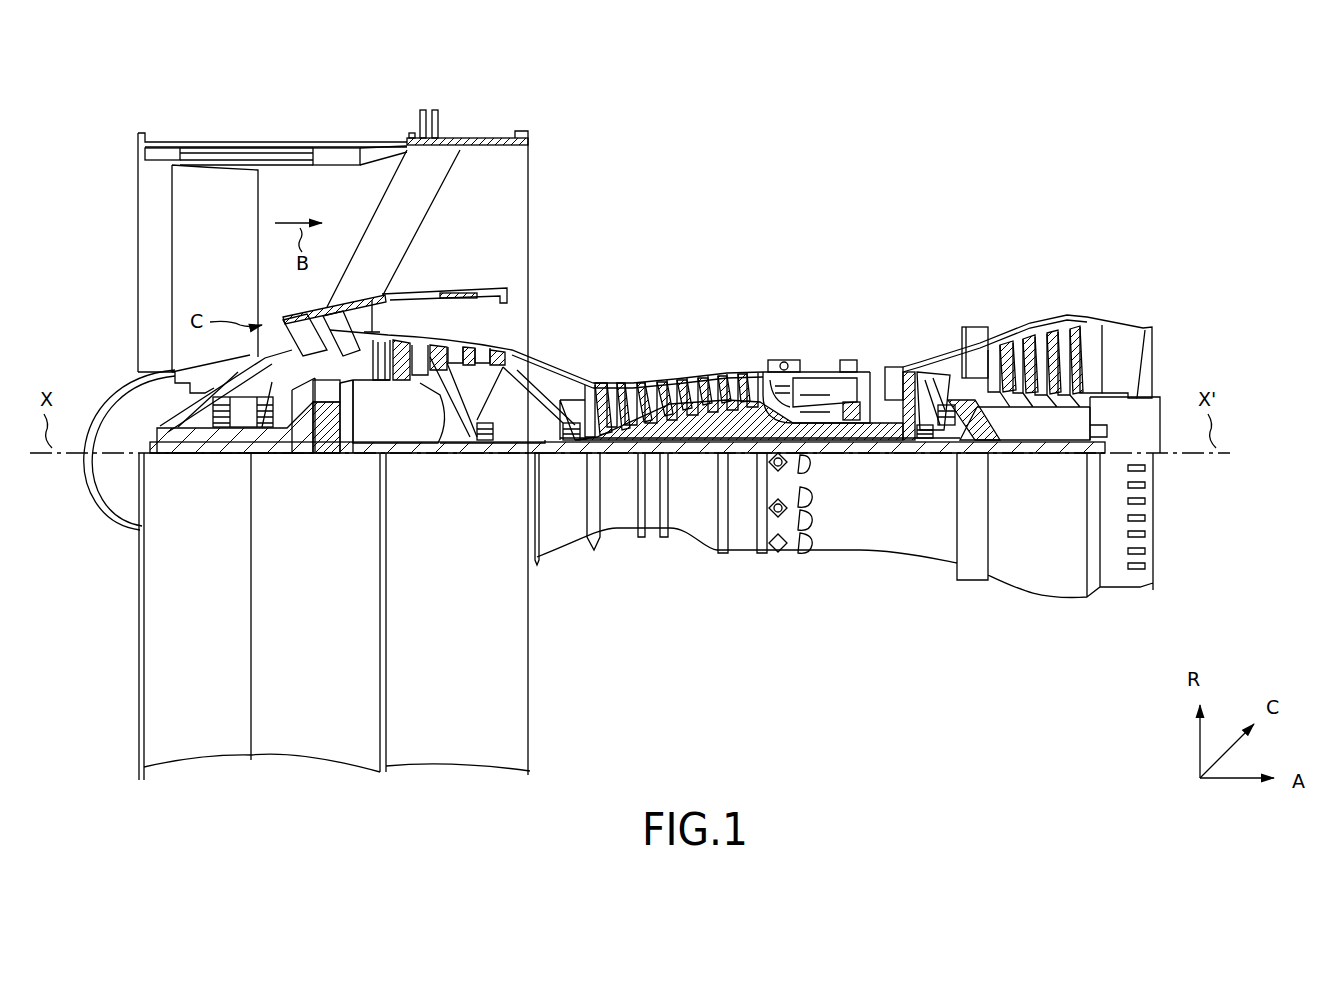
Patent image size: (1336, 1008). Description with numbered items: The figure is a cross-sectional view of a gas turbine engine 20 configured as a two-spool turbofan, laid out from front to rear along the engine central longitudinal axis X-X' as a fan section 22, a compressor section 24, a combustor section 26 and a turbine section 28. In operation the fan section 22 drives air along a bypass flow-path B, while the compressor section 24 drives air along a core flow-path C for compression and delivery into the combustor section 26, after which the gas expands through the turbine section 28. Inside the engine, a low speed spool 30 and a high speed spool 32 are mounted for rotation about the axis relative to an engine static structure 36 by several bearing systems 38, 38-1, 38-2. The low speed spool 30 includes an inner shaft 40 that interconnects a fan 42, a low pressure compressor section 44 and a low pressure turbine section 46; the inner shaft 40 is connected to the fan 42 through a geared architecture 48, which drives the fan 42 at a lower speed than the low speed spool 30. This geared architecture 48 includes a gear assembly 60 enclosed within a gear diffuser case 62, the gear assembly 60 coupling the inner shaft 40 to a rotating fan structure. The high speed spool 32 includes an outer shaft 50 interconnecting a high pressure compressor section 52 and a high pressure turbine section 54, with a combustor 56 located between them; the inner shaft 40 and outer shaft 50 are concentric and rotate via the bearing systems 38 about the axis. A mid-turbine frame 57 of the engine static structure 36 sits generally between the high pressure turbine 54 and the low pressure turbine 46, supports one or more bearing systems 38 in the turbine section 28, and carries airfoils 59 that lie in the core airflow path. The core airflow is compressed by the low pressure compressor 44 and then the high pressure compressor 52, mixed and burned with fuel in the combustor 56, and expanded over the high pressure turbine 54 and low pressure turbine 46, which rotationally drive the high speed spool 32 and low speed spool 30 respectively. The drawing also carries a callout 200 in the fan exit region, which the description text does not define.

The gas turbine engine 20 is at (878, 176).
The fan section 22 is at (378, 120).
The compressor section 24 is at (388, 253).
The combustor section 26 is at (875, 253).
The turbine section 28 is at (1092, 253).
The low speed spool 30 is at (704, 488).
The high speed spool 32 is at (737, 422).
The engine static structure 36 is at (124, 768).
The bearing system 38 is at (927, 457).
The bearing system 38-1 is at (213, 447).
The bearing system 38-2 is at (479, 453).
The inner shaft 40 is at (555, 455).
The fan 42 is at (215, 268).
The low pressure compressor section 44 is at (457, 356).
The low pressure turbine section 46 is at (1025, 339).
The geared architecture 48 is at (350, 480).
The outer shaft 50 is at (820, 440).
The high pressure compressor section 52 is at (697, 382).
The high pressure turbine section 54 is at (890, 365).
The combustor 56 is at (829, 397).
The mid-turbine frame 57 is at (940, 360).
The airfoils 59 is at (943, 367).
The gear assembly 60 is at (380, 440).
The gear diffuser case 62 is at (347, 397).
The fan exit guide vane / frame 200 is at (403, 332).